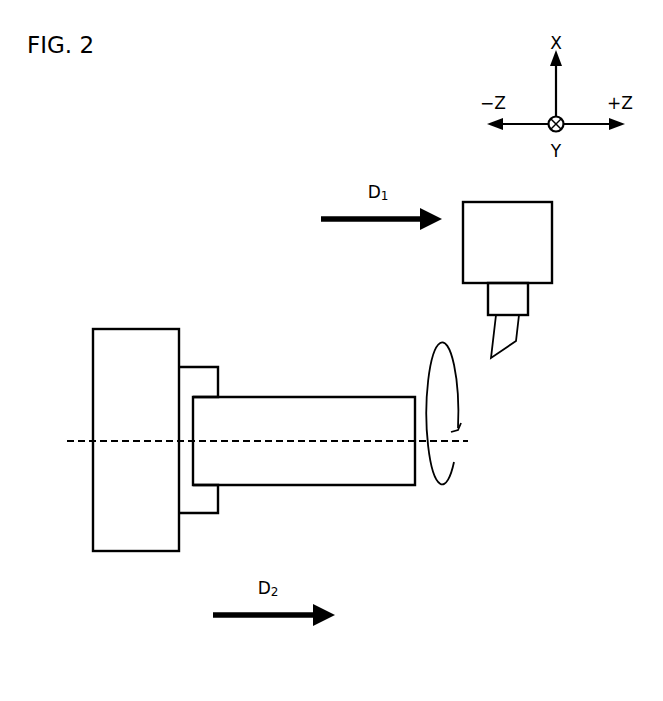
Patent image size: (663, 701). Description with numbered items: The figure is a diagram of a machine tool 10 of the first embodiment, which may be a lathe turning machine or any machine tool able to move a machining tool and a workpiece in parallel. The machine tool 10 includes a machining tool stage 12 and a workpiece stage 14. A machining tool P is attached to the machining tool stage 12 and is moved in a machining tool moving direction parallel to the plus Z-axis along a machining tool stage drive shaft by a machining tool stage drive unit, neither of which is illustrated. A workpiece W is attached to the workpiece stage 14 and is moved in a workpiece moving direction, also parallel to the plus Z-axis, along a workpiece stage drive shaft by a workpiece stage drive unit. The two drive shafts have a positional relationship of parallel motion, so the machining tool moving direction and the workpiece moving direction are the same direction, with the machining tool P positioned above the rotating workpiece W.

The machine tool 10 is at (137, 148).
The machining tool stage 12 is at (537, 238).
The workpiece stage 14 is at (167, 353).
The machining tool P is at (510, 330).
The workpiece W is at (347, 477).